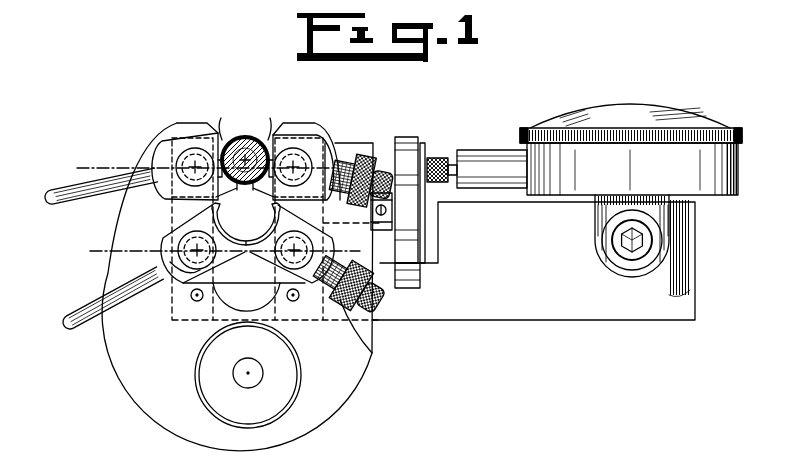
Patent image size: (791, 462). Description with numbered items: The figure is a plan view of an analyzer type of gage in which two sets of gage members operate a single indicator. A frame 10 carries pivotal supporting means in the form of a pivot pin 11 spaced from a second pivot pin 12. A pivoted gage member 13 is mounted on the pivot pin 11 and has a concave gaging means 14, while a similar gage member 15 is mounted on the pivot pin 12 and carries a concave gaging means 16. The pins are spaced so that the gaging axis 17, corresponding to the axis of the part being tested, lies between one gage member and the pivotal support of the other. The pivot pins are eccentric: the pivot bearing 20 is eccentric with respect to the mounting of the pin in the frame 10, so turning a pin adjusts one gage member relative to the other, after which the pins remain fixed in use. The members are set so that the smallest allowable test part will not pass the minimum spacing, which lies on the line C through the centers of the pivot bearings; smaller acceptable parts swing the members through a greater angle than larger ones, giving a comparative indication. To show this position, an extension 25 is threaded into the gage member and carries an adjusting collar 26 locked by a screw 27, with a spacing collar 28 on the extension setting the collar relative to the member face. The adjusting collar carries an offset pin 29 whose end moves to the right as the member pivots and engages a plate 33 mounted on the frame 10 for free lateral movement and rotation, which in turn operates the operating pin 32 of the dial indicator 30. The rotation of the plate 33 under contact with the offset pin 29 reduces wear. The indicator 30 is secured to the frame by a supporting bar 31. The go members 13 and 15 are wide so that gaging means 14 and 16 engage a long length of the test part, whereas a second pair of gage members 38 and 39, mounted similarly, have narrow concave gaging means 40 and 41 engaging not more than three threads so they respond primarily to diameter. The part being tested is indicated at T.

The frame 10 is at (136, 368).
The pivot pin 11 is at (178, 158).
The pivot pin 12 is at (313, 137).
The pivoted gage member 13 is at (219, 135).
The gaging means 14 is at (249, 138).
The gage member 15 is at (283, 135).
The gaging means 16 is at (252, 152).
The gaging axis 17 is at (245, 191).
The pivot bearing 20 is at (174, 234).
The extension 25 is at (352, 154).
The adjusting collar 26 is at (382, 145).
The screw 27 is at (378, 320).
The spacing collar 28 is at (360, 138).
The offset pin 29 is at (383, 173).
The dial indicator 30 is at (740, 163).
The supporting bar 31 is at (562, 316).
The operating pin 32 is at (437, 158).
The plate 33 is at (408, 138).
The gage member 38 is at (186, 270).
The gage member 39 is at (317, 297).
The gaging means 40 is at (223, 236).
The gaging means 41 is at (272, 233).
The tube T is at (240, 139).
The line C is at (97, 167).